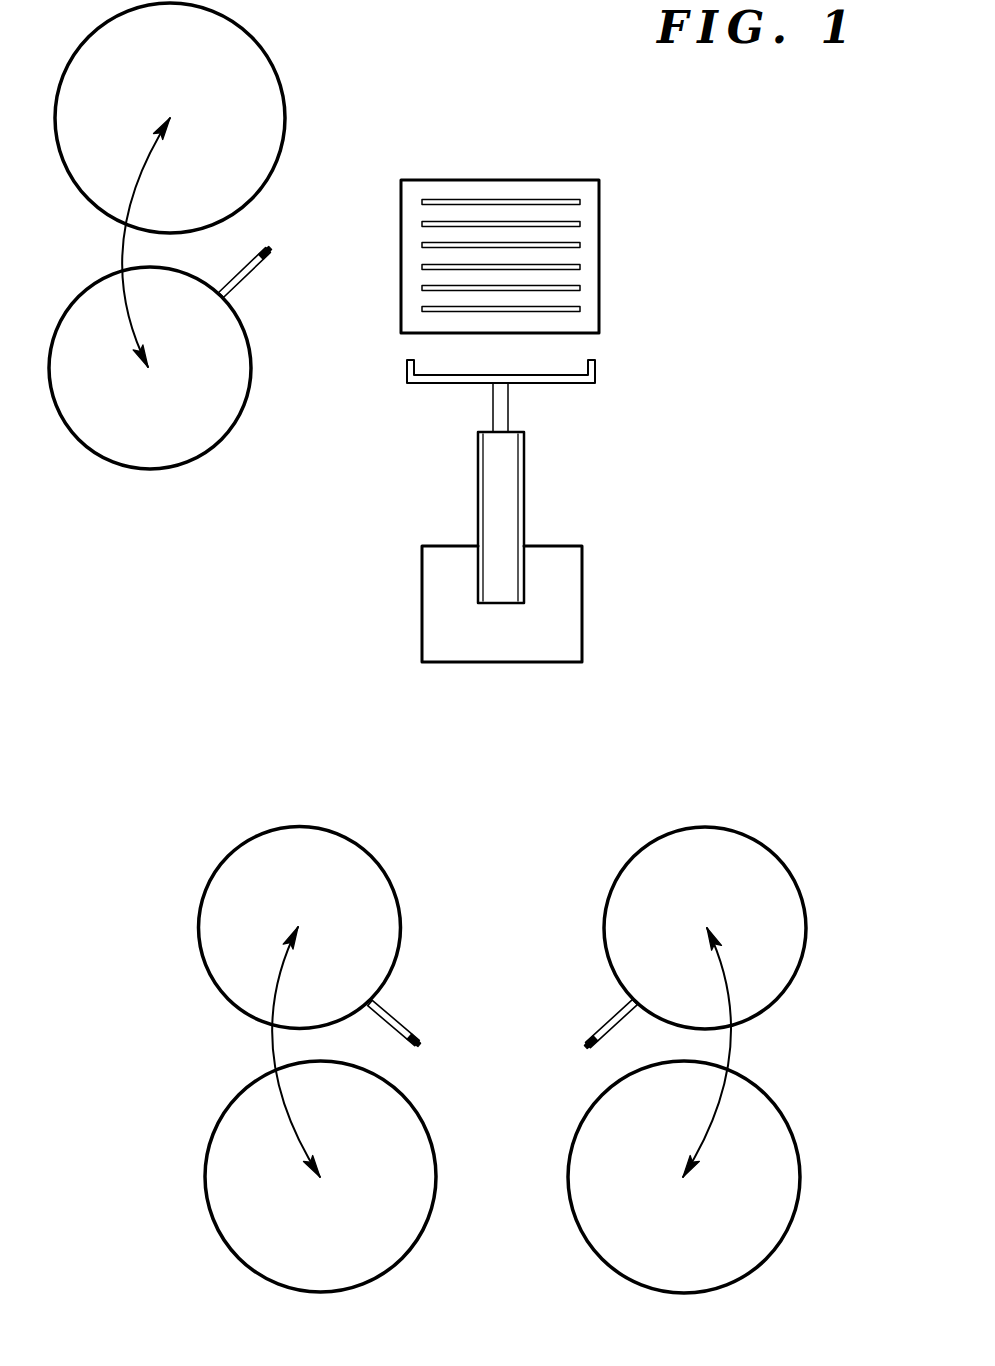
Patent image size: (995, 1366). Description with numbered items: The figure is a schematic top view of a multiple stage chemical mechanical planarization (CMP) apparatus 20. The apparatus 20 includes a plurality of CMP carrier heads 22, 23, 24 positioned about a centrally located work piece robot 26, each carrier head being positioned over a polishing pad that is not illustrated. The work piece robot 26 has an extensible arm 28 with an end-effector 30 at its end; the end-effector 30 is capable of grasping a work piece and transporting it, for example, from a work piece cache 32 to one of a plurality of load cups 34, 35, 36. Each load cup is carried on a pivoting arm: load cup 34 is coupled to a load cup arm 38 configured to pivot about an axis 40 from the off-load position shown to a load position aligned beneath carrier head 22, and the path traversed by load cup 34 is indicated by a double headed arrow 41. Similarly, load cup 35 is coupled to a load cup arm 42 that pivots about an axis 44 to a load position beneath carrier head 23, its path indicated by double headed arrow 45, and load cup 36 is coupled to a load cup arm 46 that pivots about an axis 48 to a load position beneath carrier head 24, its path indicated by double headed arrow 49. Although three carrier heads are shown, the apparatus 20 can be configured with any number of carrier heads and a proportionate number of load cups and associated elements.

The chemical mechanical planarization apparatus 20 is at (769, 119).
The chemical mechanical planarization carrier head 22 is at (81, 45).
The chemical mechanical planarization carrier head 23 is at (219, 1231).
The chemical mechanical planarization carrier head 24 is at (786, 1231).
The work piece robot 26 is at (582, 600).
The extensible arm 28 is at (478, 490).
The end-effector 30 is at (595, 372).
The work piece cache 32 is at (505, 180).
The load cup 34 is at (72, 433).
The load cup 35 is at (221, 863).
The load cup 36 is at (783, 864).
The load cup arm 38 is at (246, 278).
The axis 40 is at (270, 249).
The double headed arrow 41 is at (124, 252).
The load cup arm 42 is at (398, 1018).
The axis 44 is at (419, 1047).
The double headed arrow 45 is at (272, 1052).
The load cup arm 46 is at (603, 1015).
The axis 48 is at (588, 1048).
The double headed arrow 49 is at (733, 1052).